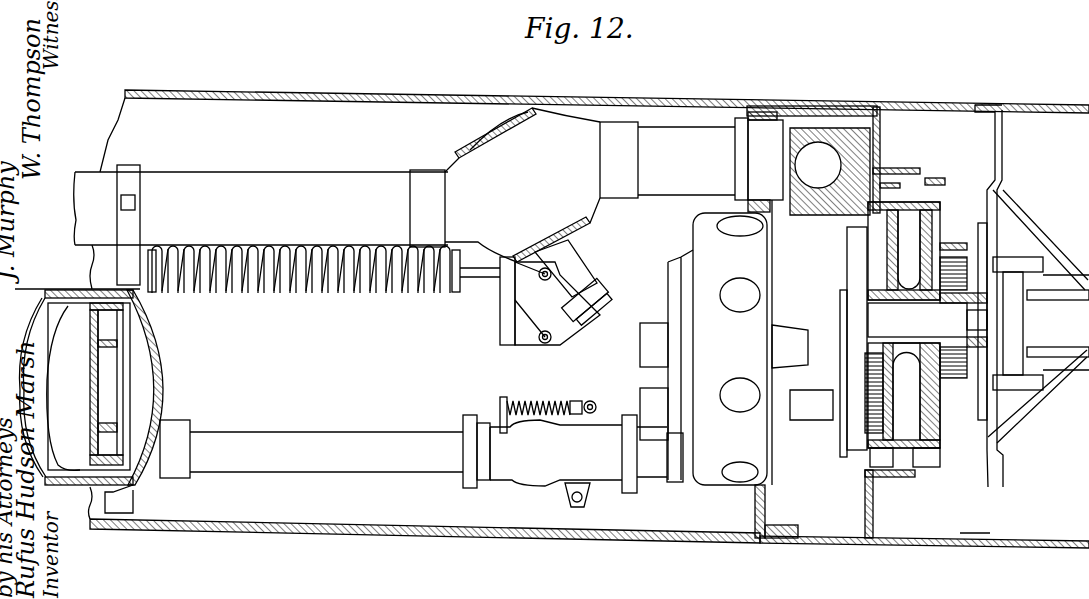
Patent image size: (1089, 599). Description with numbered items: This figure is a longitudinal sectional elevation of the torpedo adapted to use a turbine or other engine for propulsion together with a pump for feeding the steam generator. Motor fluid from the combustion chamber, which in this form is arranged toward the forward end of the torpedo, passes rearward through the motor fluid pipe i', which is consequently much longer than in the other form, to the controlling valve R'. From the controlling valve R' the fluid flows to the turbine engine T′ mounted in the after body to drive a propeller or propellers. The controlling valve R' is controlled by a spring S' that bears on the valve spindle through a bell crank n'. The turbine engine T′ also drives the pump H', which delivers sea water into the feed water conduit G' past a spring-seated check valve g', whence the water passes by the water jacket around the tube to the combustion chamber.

The motor fluid pipe i' is at (428, 198).
The controlling valve R' is at (522, 185).
The turbine engine T′ is at (918, 321).
The spring S' is at (324, 282).
The bell crank n' is at (556, 298).
The pump H' is at (724, 342).
The spring-seated check valve g' is at (562, 415).
The feed water conduit G' is at (421, 461).